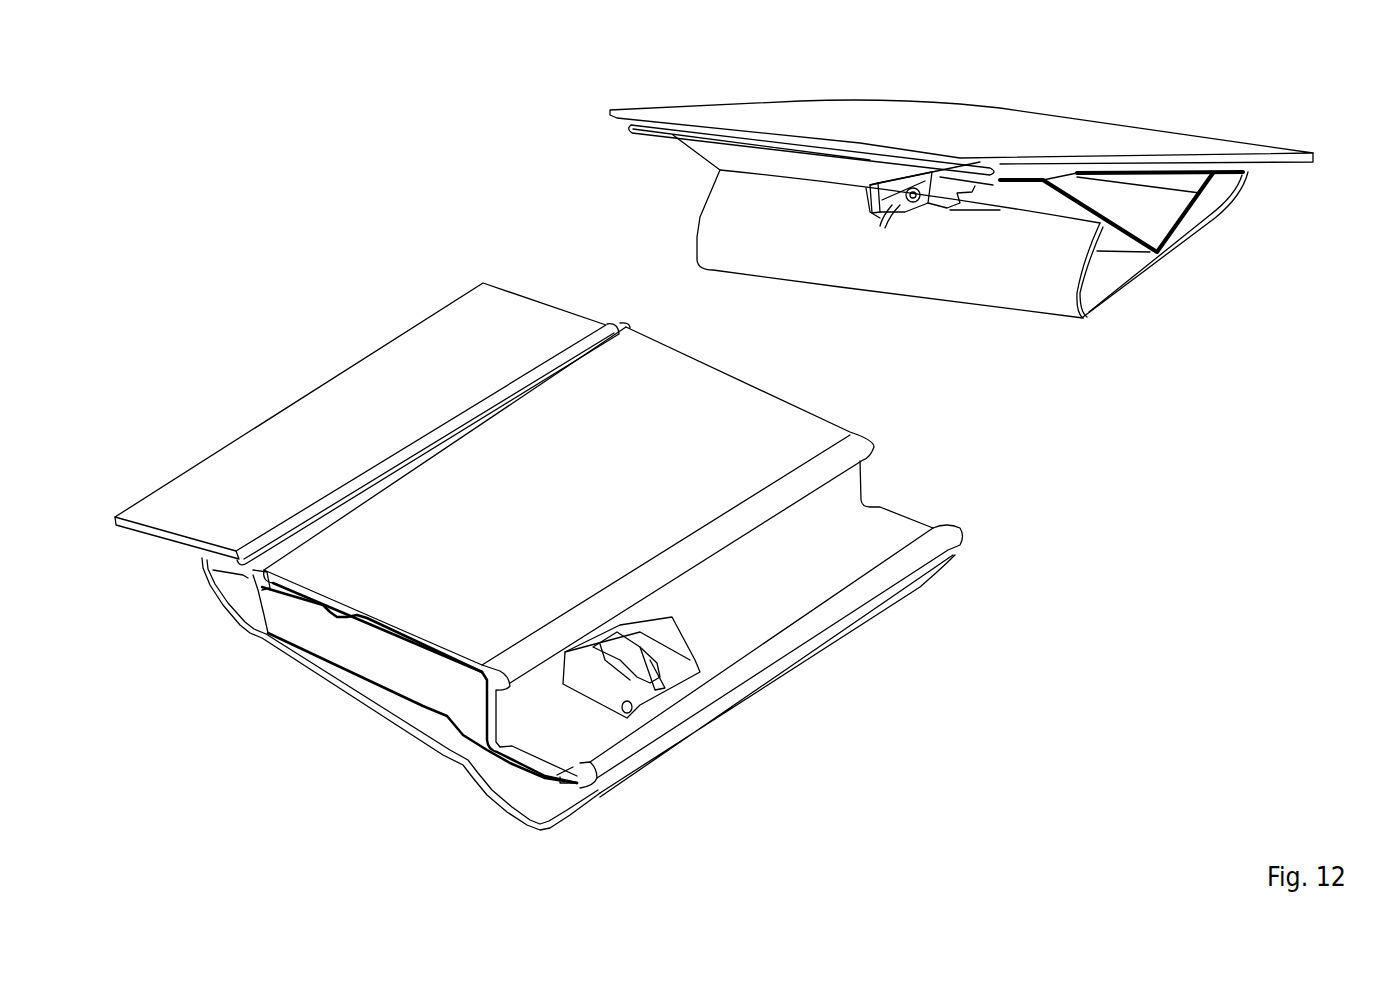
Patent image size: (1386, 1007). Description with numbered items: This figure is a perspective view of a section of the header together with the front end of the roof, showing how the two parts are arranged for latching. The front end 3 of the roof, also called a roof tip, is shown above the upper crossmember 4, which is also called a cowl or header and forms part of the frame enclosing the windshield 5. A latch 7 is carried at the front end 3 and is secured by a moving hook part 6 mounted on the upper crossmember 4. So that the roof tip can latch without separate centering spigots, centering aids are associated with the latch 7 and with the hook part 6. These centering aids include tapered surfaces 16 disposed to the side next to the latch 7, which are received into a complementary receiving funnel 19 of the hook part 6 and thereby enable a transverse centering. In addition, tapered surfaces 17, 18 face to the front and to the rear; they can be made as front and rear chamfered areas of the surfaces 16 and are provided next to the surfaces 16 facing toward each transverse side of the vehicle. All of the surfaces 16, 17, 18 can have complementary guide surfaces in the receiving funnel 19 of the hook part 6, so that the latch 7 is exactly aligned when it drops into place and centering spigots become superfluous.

The front end of the roof 3 is at (905, 130).
The upper crossmember 4 is at (540, 583).
The windshield 5 is at (365, 400).
The hook part 6 is at (680, 660).
The latch 7 is at (884, 218).
The tapered surfaces 16 is at (854, 216).
The tapered surfaces 17 is at (868, 188).
The tapered surfaces 18 is at (893, 220).
The receiving funnel 19 is at (647, 615).